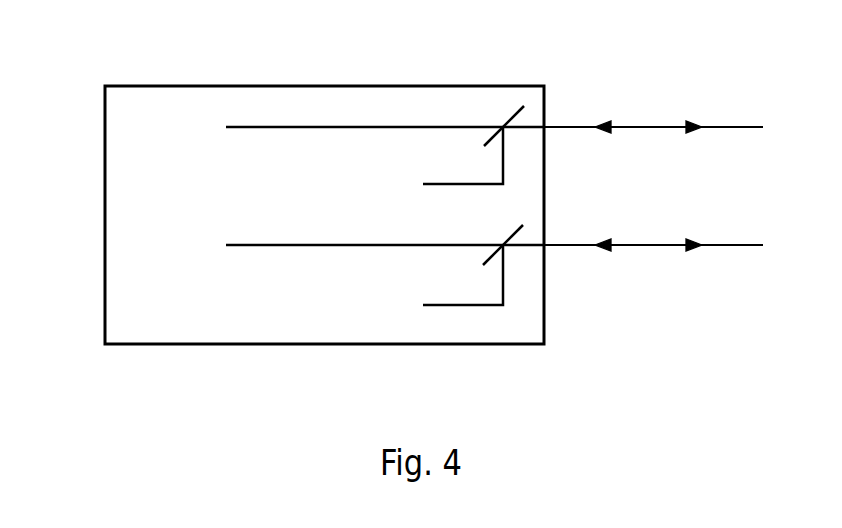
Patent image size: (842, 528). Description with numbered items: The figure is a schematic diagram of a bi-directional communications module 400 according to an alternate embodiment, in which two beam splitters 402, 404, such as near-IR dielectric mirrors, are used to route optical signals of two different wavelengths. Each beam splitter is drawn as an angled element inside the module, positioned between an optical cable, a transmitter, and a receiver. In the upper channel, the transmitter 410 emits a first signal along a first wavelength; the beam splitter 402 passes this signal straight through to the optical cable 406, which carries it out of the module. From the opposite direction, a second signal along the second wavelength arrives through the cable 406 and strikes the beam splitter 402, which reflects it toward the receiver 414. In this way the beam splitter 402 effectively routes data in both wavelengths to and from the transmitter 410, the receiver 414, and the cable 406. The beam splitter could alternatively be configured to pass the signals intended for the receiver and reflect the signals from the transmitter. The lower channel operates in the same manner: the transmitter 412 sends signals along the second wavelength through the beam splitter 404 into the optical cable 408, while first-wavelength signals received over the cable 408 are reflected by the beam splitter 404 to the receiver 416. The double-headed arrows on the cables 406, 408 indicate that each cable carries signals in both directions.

The bi-directional communications module 400 is at (503, 86).
The beam splitter 402 is at (513, 117).
The beam splitter 404 is at (510, 235).
The optical cable 406 is at (732, 127).
The optical cable 408 is at (732, 245).
The transmitter 410 is at (173, 112).
The transmitter 412 is at (173, 232).
The receiver 414 is at (379, 166).
The receiver 416 is at (380, 323).